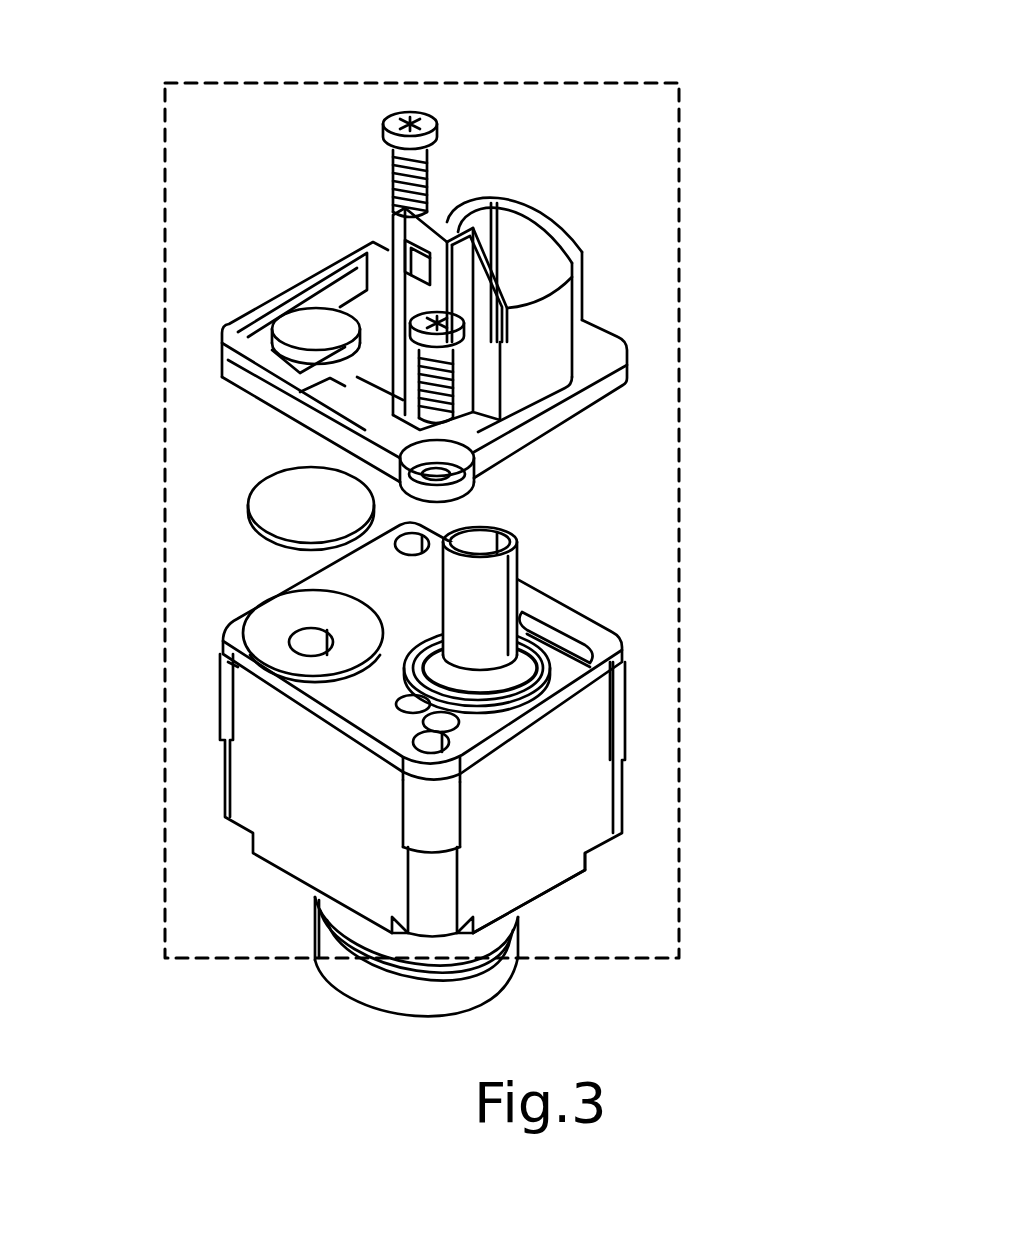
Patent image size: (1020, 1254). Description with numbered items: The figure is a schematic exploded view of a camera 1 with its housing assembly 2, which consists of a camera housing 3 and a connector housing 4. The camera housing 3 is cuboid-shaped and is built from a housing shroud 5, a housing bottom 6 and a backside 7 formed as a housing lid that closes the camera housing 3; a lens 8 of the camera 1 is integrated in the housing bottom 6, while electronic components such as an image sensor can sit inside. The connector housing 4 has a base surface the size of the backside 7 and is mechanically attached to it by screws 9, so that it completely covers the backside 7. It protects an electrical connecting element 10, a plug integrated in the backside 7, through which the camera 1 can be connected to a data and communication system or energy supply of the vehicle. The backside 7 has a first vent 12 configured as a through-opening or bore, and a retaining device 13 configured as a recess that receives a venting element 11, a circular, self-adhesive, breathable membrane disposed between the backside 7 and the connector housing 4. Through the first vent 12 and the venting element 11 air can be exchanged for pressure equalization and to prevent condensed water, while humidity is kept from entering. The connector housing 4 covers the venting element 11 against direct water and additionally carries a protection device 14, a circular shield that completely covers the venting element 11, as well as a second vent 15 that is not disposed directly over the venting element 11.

The camera 1 is at (710, 117).
The housing assembly 2 is at (679, 226).
The camera housing 3 is at (623, 742).
The connector housing 4 is at (610, 388).
The housing shroud 5 is at (538, 883).
The housing bottom 6 is at (577, 880).
The backside 7 is at (237, 665).
The lens 8 is at (395, 1000).
The screws 9 is at (436, 316).
The electrical connecting element 10 is at (495, 578).
The venting element 11 is at (248, 510).
The first vent 12 is at (300, 635).
The retaining device 13 is at (287, 658).
The protection device 14 is at (303, 330).
The second vent 15 is at (332, 388).